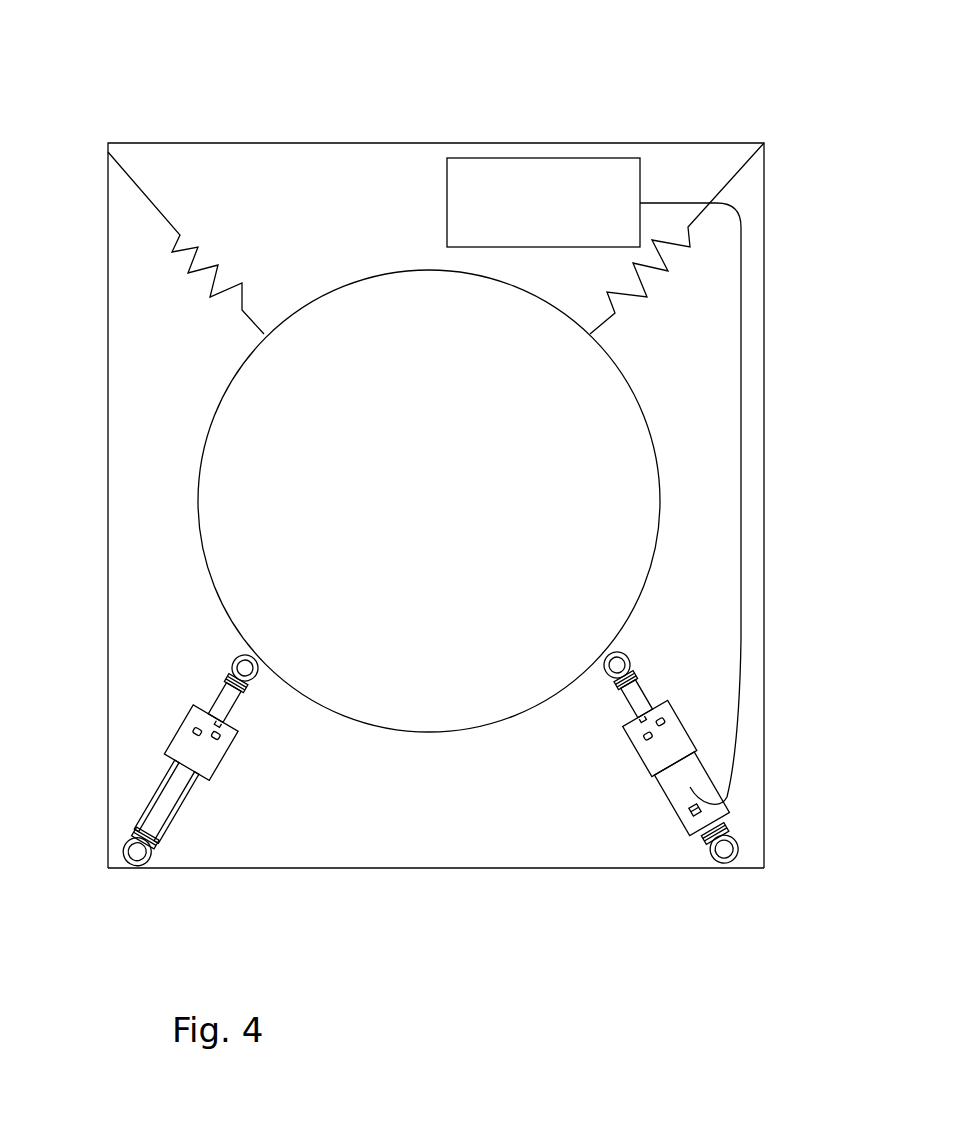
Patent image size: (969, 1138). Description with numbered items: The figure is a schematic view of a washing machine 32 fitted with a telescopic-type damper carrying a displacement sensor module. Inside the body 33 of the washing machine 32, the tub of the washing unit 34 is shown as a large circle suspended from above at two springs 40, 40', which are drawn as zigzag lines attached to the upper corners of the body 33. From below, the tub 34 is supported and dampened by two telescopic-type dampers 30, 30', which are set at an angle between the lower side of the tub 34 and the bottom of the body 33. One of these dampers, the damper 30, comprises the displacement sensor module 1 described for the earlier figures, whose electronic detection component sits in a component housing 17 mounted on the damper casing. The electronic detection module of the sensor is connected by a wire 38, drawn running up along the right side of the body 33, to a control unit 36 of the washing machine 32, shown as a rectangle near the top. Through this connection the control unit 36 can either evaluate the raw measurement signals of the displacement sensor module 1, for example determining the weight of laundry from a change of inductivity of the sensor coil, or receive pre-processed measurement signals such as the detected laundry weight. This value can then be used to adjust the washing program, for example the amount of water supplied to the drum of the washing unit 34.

The displacement sensor module 1 is at (669, 818).
The component housing 17 is at (690, 778).
The damper 30 is at (664, 798).
The damper 30' is at (218, 803).
The washing machine 32 is at (283, 99).
The body 33 is at (703, 868).
The washing unit/tub 34 is at (413, 682).
The control unit 36 is at (548, 178).
The wire 38 is at (747, 447).
The spring 40 is at (719, 238).
The spring 40' is at (174, 203).